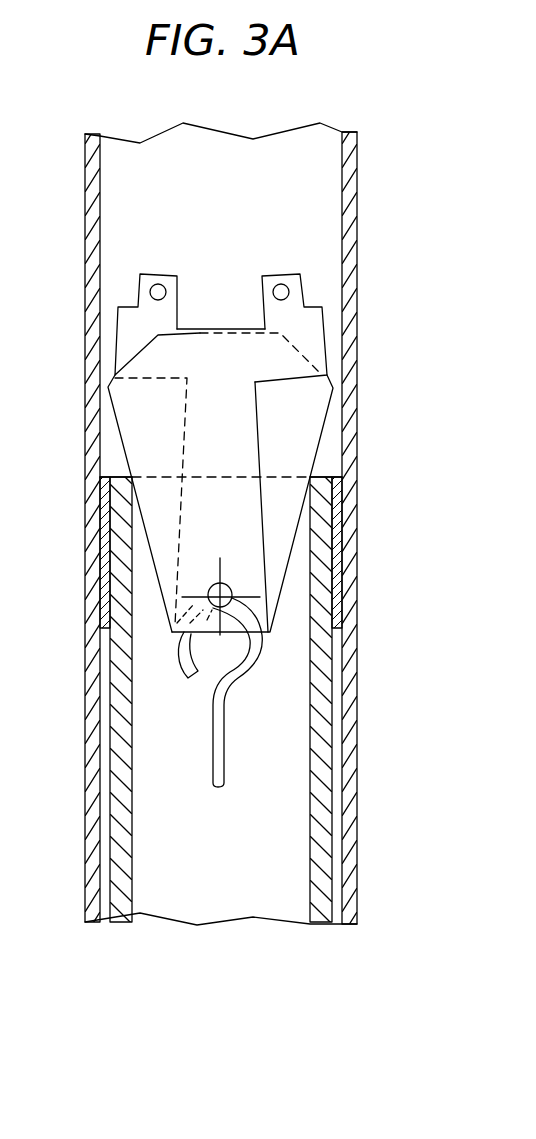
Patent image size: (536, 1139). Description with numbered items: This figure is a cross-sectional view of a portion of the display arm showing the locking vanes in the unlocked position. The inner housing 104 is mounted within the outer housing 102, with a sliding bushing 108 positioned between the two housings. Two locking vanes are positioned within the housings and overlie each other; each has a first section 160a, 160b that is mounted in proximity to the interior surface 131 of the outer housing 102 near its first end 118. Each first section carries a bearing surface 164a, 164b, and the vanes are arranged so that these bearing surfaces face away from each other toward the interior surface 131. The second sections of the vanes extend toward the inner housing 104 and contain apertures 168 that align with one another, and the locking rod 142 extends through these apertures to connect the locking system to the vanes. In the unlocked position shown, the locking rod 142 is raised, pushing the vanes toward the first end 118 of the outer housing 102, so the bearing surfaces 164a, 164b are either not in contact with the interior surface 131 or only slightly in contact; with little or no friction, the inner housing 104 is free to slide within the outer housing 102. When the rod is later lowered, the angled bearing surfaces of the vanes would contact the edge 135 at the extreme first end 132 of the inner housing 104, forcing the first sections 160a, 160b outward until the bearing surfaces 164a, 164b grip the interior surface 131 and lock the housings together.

The outer housing 102 is at (255, 528).
The first end 118 is at (355, 133).
The interior surface 131 is at (100, 205).
The inner housing 104 is at (117, 682).
The sliding bushing 108 is at (337, 542).
The edge 135 is at (130, 474).
The extreme first end 132 is at (318, 474).
The first section 160b is at (125, 320).
The bearing surface 164b is at (113, 338).
The first section 160a is at (313, 320).
The bearing surface 164a is at (323, 340).
The aperture 168 is at (209, 591).
The locking rod 142 is at (213, 765).